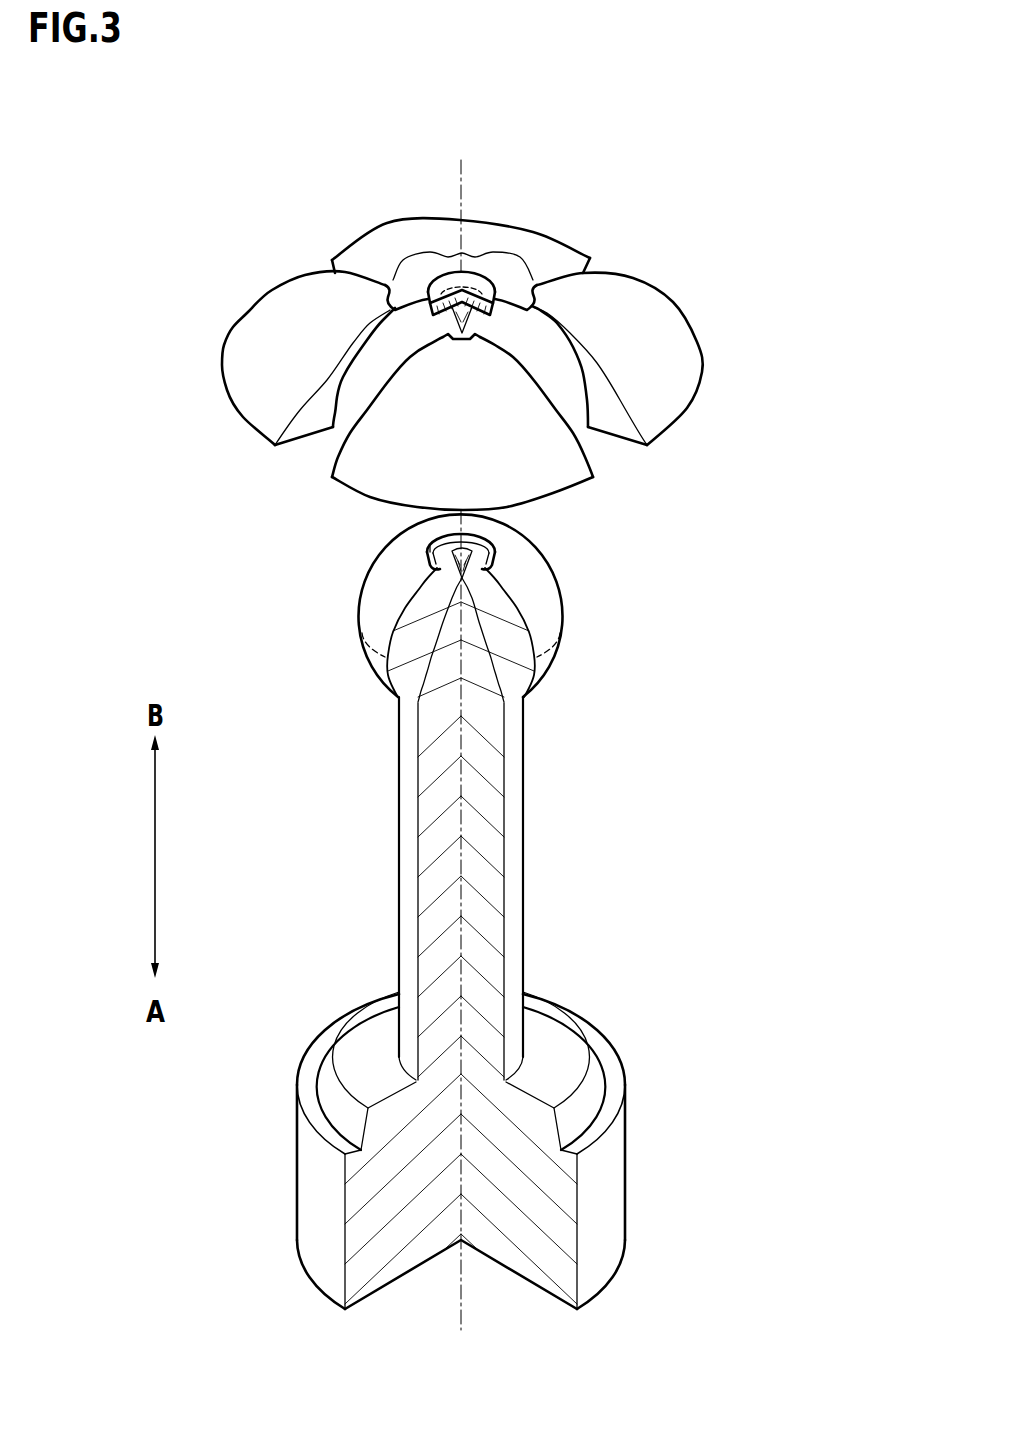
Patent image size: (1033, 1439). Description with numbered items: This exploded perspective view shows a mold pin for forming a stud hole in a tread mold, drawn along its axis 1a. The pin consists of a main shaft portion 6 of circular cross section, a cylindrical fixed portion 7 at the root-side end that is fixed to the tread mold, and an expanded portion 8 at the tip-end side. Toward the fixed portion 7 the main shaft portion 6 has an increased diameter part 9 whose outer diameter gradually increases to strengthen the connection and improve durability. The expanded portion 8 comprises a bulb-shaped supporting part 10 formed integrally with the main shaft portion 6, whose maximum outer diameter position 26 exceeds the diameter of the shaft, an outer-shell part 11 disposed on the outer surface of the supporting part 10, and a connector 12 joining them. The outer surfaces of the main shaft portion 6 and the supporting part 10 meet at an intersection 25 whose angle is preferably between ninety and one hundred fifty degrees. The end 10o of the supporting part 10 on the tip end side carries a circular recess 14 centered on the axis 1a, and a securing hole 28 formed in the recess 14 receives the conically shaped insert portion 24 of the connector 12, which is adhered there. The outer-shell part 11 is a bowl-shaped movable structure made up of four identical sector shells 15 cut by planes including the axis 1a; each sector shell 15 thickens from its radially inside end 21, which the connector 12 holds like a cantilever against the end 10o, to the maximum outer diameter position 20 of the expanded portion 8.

The axis 1a is at (463, 180).
The main shaft portion 6 is at (517, 855).
The fixed portion 7 is at (610, 1190).
The expanded portion 8 is at (826, 215).
The increased diameter part 9 is at (567, 1047).
The supporting part 10 is at (553, 620).
The end of the supporting part 10o is at (427, 538).
The outer-shell part 11 is at (767, 200).
The connector 12 is at (483, 277).
The recess 14 is at (480, 547).
The sector shells 15 is at (505, 250).
The maximum outer diameter position 20 is at (220, 377).
The radially inside end 21 is at (400, 280).
The insert portion 24 is at (440, 327).
The intersection 25 is at (523, 703).
The maximum outer diameter position of the supporting part 26 is at (355, 640).
The securing hole 28 is at (398, 700).